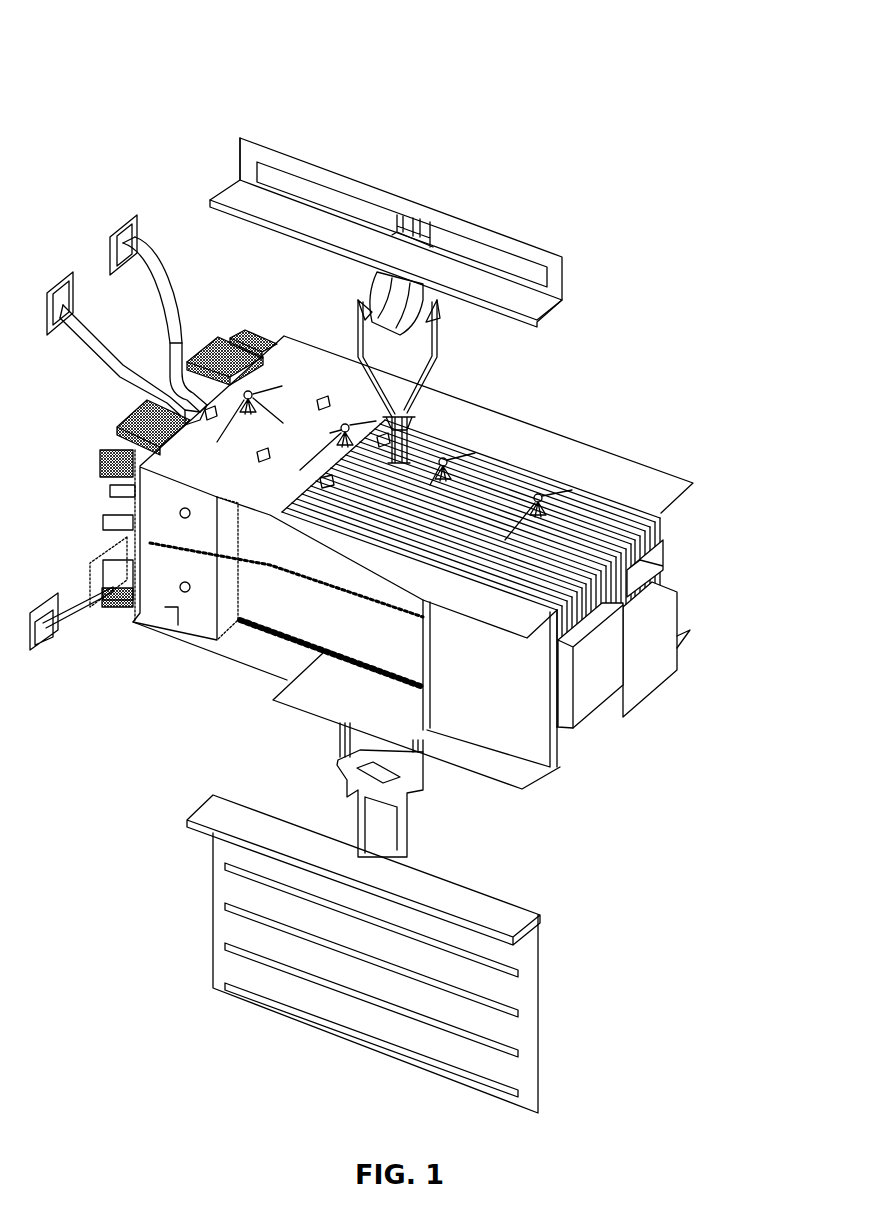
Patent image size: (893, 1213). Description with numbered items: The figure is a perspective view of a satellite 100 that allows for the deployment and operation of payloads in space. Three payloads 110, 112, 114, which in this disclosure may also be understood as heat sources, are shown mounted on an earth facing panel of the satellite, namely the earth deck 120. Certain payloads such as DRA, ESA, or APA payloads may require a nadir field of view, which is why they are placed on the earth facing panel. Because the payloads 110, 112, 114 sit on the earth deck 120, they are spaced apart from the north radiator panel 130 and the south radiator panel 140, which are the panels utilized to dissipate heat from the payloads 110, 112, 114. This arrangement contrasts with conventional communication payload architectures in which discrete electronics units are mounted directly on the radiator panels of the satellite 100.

The satellite 100 is at (122, 70).
The payload 110 is at (587, 693).
The payload 112 is at (653, 667).
The payload 114 is at (668, 558).
The earth deck 120 is at (657, 558).
The north radiator panel 130 is at (610, 464).
The south radiator panel 140 is at (517, 764).